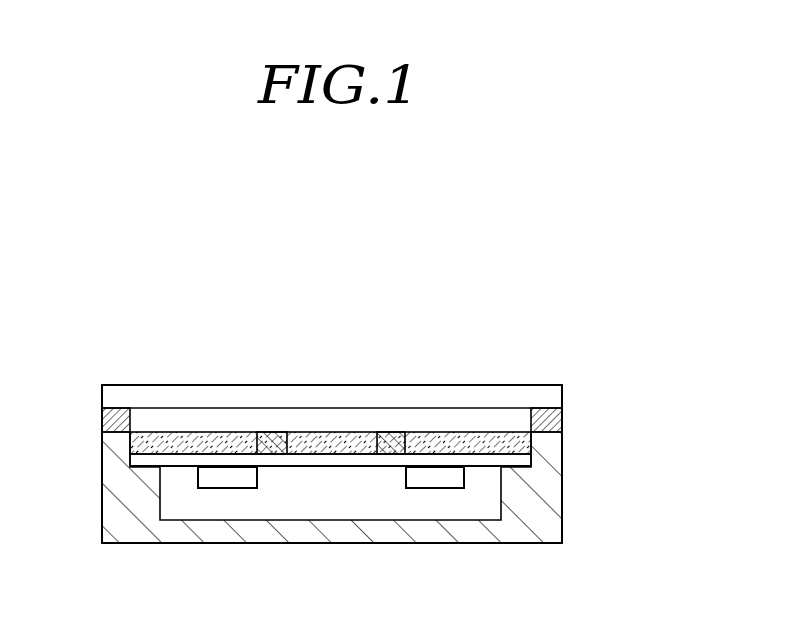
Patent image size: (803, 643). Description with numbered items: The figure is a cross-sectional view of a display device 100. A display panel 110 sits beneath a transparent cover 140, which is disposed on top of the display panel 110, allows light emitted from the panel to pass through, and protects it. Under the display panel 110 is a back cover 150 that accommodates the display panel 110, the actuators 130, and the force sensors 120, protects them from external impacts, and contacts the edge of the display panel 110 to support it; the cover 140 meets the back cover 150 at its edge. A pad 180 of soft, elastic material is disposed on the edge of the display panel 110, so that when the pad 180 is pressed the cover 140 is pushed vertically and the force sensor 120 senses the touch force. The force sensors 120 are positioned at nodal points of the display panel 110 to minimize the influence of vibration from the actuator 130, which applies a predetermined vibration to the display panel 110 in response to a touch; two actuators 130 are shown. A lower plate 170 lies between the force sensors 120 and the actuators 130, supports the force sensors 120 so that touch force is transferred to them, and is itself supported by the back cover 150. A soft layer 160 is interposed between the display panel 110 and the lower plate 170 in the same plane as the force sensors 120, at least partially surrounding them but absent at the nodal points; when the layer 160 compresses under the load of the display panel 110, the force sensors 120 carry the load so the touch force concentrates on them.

The display device 100 is at (552, 306).
The display panel 110 is at (197, 420).
The force sensors 120 is at (393, 438).
The actuator 130 is at (423, 478).
The cover 140 is at (553, 396).
The back cover 150 is at (555, 523).
The layer 160 is at (435, 442).
The lower plate 170 is at (528, 460).
The pad 180 is at (105, 420).